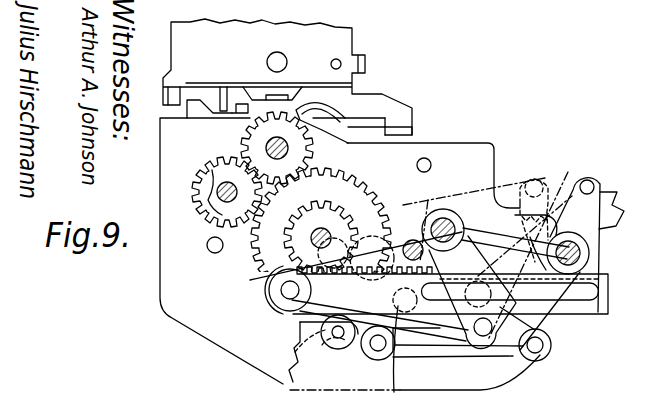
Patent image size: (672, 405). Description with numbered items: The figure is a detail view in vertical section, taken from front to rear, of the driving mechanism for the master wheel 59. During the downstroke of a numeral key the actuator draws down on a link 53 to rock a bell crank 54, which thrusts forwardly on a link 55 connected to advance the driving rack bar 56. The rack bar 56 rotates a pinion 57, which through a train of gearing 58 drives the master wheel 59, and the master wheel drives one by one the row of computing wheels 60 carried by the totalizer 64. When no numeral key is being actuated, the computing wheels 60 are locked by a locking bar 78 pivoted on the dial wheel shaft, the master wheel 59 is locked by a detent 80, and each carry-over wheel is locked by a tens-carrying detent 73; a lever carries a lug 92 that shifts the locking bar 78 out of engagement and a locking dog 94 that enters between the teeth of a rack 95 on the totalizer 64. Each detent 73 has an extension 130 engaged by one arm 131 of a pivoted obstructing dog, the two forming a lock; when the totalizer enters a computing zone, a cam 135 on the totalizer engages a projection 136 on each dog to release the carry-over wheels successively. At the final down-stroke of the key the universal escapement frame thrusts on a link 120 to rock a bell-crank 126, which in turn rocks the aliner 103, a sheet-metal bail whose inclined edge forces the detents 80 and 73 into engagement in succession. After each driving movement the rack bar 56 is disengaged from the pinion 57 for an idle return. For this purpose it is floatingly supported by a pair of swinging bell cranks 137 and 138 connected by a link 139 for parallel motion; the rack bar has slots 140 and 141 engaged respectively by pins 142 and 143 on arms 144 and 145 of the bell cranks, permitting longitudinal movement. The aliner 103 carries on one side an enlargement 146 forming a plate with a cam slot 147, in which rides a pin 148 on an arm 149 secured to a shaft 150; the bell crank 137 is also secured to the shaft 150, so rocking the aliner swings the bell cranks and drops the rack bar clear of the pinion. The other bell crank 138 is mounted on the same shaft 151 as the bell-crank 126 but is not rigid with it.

The link 53 is at (568, 178).
The bell crank 54 is at (470, 193).
The link 55 is at (379, 346).
The driving rack bar 56 is at (268, 276).
The pinion 57 is at (300, 256).
The train of gearing 58 is at (233, 148).
The master wheel 59 is at (254, 98).
The computing wheels 60 is at (280, 97).
The totalizer 64 is at (257, 48).
The detent 73 is at (323, 102).
The locking bar 78 is at (224, 100).
The master-wheel detent 80 is at (312, 149).
The lug 92 is at (240, 104).
The locking dog 94 is at (201, 121).
The rack 95 is at (168, 100).
The aliner 103 is at (298, 341).
The link 120 is at (603, 194).
The bell-crank 126 is at (612, 218).
The extension 130 is at (360, 133).
The arm 131 is at (411, 146).
The cam 135 is at (412, 131).
The projection 136 is at (398, 130).
The bell crank 137 is at (401, 336).
The bell crank 138 is at (552, 348).
The link 139 is at (459, 348).
The slot 140 is at (412, 320).
The slot 141 is at (595, 312).
The pin 142 is at (326, 228).
The pin 143 is at (487, 282).
The arm 144 is at (402, 232).
The arm 145 is at (540, 262).
The enlargement 146 is at (313, 346).
The cam slot 147 is at (397, 250).
The pin 148 is at (338, 346).
The arm 149 is at (426, 214).
The shaft 150 is at (424, 253).
The shaft 151 is at (591, 254).